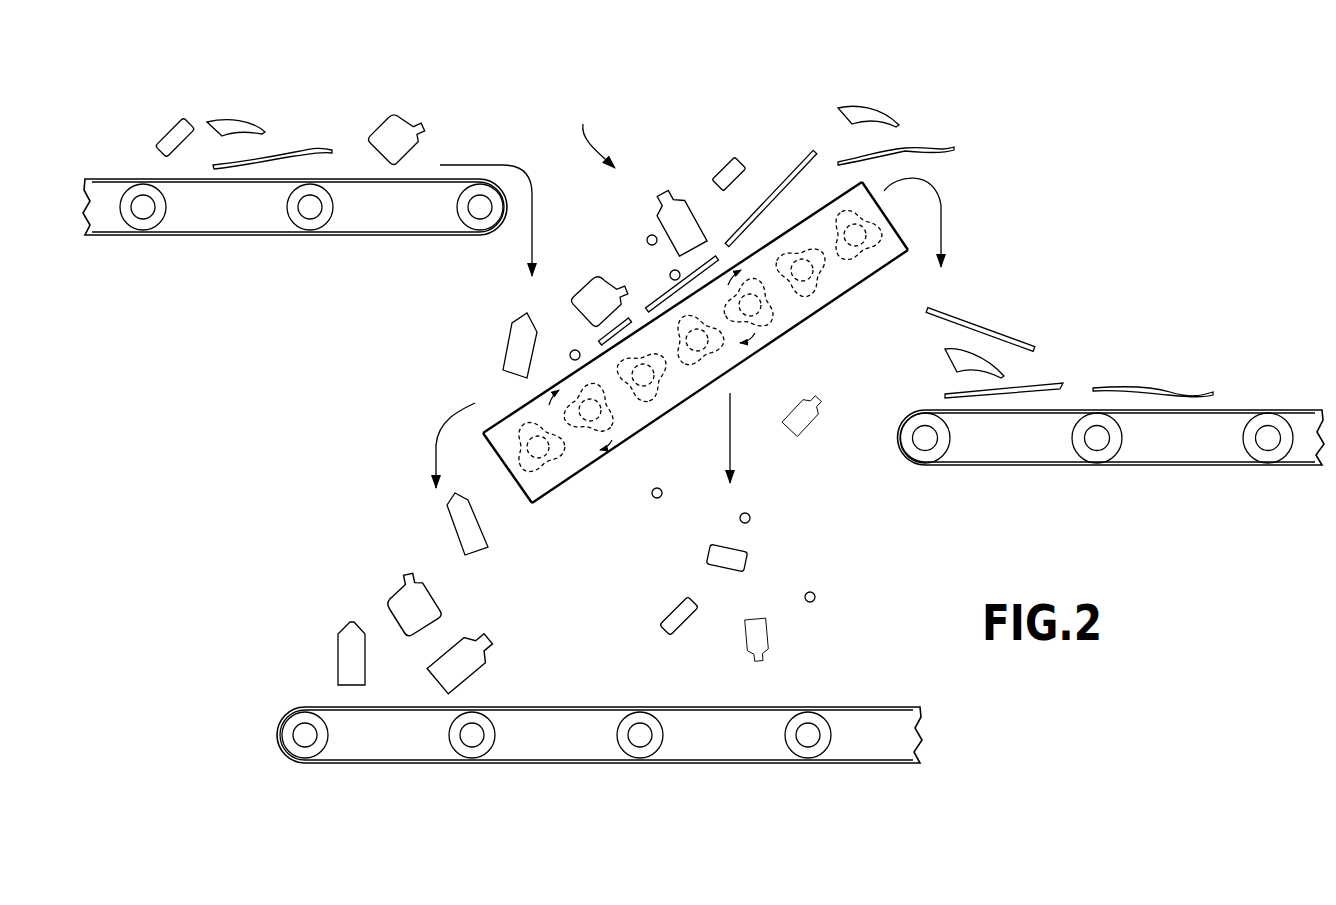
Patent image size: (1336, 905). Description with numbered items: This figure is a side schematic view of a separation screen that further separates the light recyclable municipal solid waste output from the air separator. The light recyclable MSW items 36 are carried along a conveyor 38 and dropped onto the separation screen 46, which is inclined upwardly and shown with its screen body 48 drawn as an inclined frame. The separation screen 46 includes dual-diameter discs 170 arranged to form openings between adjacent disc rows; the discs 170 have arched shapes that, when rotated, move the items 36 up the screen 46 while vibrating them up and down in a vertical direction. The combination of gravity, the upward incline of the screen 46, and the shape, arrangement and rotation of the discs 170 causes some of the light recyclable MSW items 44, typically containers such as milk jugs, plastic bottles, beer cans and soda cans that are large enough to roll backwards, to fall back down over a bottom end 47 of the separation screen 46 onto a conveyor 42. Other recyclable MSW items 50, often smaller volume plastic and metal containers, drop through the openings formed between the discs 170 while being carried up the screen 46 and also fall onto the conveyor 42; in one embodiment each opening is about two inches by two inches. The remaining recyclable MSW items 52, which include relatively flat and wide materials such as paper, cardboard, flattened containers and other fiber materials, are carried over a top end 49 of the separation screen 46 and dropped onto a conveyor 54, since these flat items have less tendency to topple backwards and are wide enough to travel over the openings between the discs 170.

The light recyclable MSW items 36 is at (227, 118).
The conveyor 38 is at (280, 237).
The conveyor 42 is at (612, 765).
The light recyclable MSW items 44 is at (436, 446).
The separation screen 46 is at (591, 132).
The bottom end 47 is at (516, 496).
The rotary disc screen 48 is at (853, 285).
The top end 49 is at (908, 231).
The recyclable MSW items 50 is at (729, 442).
The recyclable MSW items 52 is at (942, 210).
The conveyor 54 is at (1128, 468).
The dual-diameter discs 170 is at (582, 460).